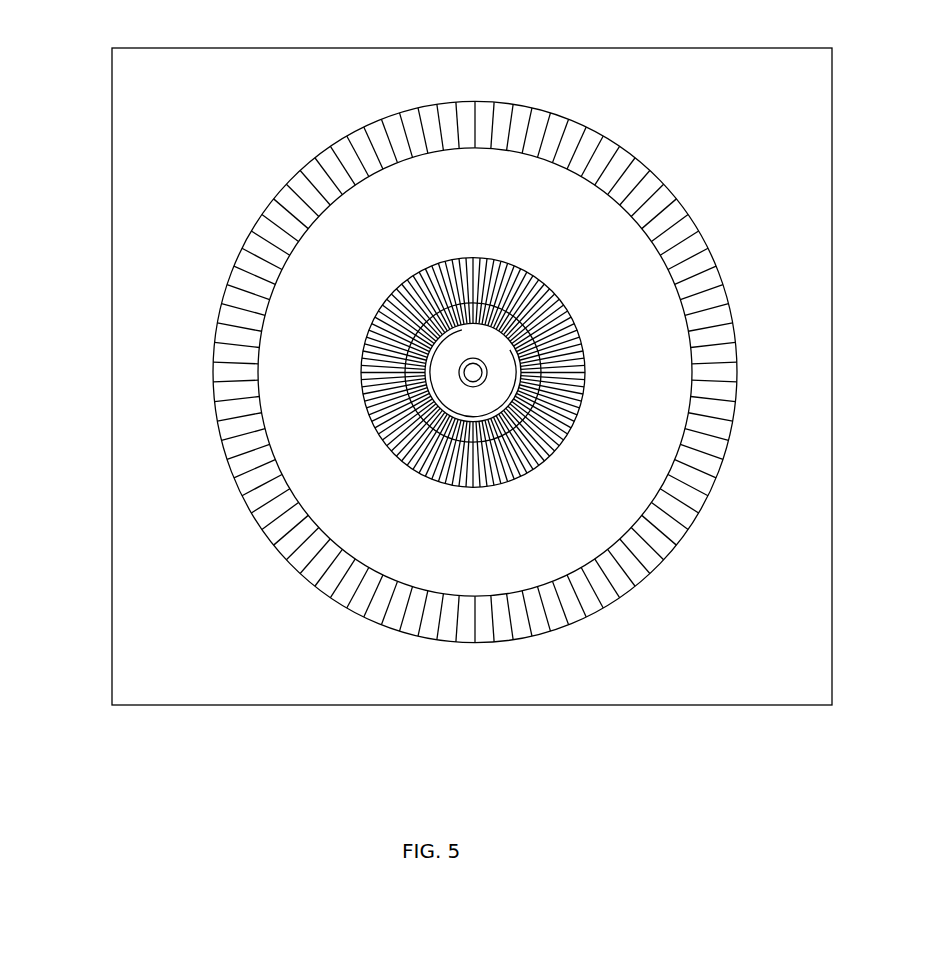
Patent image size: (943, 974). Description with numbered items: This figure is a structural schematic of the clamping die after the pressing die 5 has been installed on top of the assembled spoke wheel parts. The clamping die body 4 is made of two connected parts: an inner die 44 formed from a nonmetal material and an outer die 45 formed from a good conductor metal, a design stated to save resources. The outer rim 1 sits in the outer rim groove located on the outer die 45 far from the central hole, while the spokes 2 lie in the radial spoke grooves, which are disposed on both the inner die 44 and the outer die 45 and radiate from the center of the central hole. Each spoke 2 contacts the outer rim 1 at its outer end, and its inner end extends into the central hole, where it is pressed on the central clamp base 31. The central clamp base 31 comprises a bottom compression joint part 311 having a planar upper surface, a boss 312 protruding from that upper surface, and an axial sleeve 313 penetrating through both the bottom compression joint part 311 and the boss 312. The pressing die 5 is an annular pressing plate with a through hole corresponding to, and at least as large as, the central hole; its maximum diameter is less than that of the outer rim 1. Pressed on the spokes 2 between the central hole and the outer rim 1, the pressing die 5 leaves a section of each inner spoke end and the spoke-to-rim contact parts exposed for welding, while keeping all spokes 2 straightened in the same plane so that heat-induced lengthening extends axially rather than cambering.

The outer rim 1 is at (474, 449).
The spoke 2 is at (393, 403).
The clamping die body 4 is at (431, 376).
The pressing die 5 is at (350, 496).
The central clamp base 31 is at (471, 497).
The inner die 44 is at (475, 476).
The outer die 45 is at (422, 376).
The bottom compression joint part 311 is at (282, 350).
The boss 312 is at (268, 312).
The axial sleeve 313 is at (608, 582).